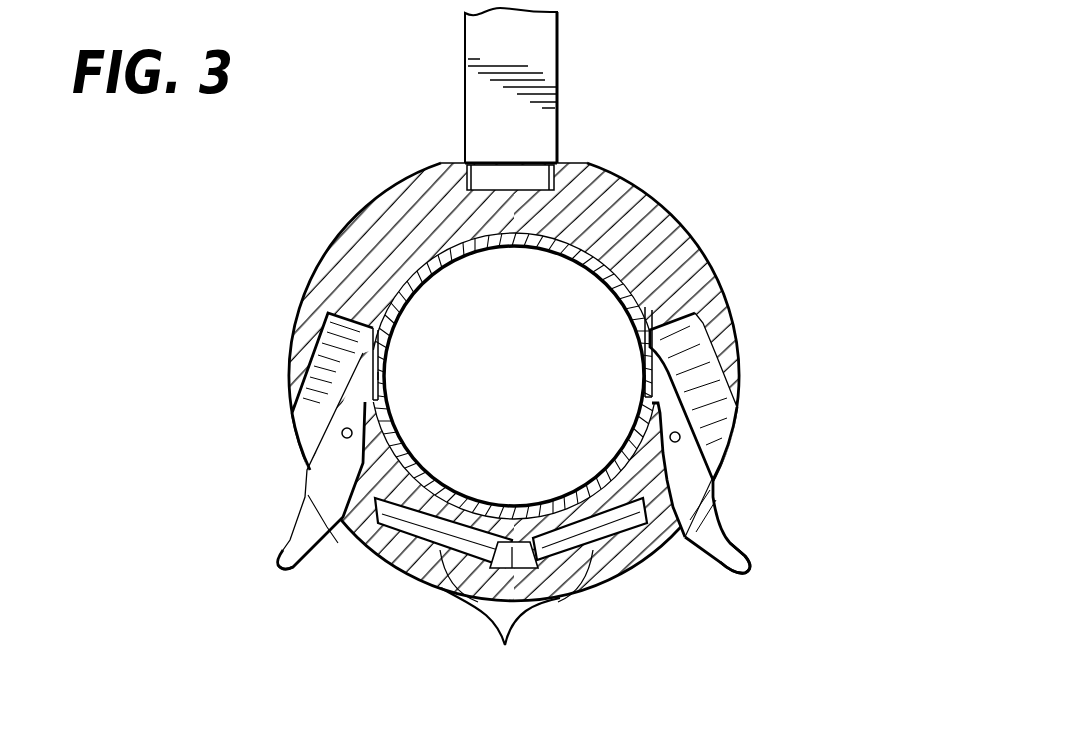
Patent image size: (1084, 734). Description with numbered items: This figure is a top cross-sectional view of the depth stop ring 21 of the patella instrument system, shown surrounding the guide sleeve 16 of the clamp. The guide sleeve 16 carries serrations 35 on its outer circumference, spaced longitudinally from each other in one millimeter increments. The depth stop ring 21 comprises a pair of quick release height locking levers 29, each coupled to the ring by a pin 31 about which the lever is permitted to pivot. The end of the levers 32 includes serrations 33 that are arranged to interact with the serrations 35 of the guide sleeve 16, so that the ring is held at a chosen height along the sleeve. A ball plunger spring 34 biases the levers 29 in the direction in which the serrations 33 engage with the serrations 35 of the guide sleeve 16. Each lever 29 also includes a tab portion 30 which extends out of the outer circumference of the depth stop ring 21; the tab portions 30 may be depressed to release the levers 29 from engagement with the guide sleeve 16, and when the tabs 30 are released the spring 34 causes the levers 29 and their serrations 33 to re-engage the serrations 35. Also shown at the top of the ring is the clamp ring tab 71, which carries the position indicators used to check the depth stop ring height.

The guide sleeve 16 is at (529, 250).
The depth stop ring 21 is at (712, 255).
The quick release height locking lever 29 is at (283, 542).
The tab portion 30 is at (282, 572).
The pin 31 is at (341, 434).
The end of the lever 32 is at (322, 335).
The serrations 33 is at (648, 372).
The ball plunger spring 34 is at (511, 588).
The serrations 35 is at (372, 385).
The clamp ring tab 71 is at (500, 180).